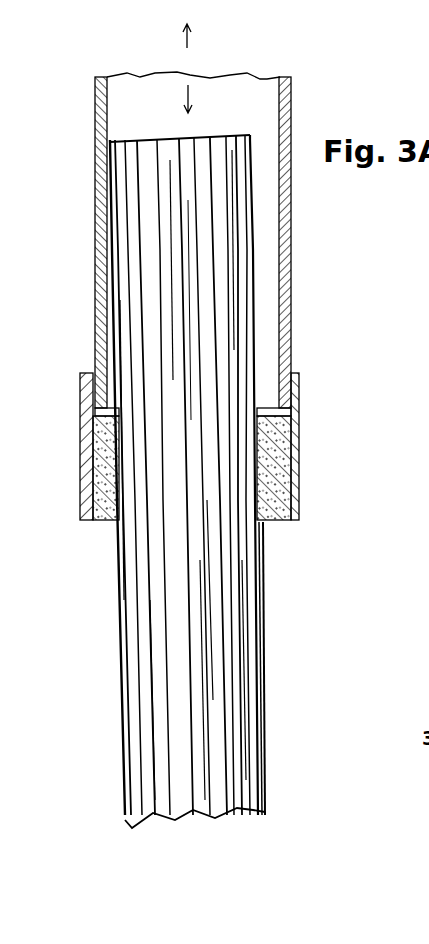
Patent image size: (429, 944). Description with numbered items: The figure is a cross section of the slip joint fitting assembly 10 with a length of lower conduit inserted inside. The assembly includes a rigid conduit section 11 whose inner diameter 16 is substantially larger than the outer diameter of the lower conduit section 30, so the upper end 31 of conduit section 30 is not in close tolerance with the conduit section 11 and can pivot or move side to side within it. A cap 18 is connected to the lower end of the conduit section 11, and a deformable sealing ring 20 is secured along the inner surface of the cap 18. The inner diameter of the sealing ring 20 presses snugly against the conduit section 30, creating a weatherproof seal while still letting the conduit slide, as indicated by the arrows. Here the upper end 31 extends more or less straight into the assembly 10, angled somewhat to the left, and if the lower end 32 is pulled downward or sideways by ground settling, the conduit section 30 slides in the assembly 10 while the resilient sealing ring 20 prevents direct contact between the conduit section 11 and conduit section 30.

The slip joint fitting assembly 10 is at (338, 220).
The rigid conduit section 11 is at (294, 110).
The inner diameter 16 is at (280, 104).
The cap 18 is at (80, 400).
The deformable sealing ring 20 is at (100, 519).
The lower conduit section 30 is at (153, 638).
The upper end 31 is at (160, 133).
The lower end 32 is at (253, 815).